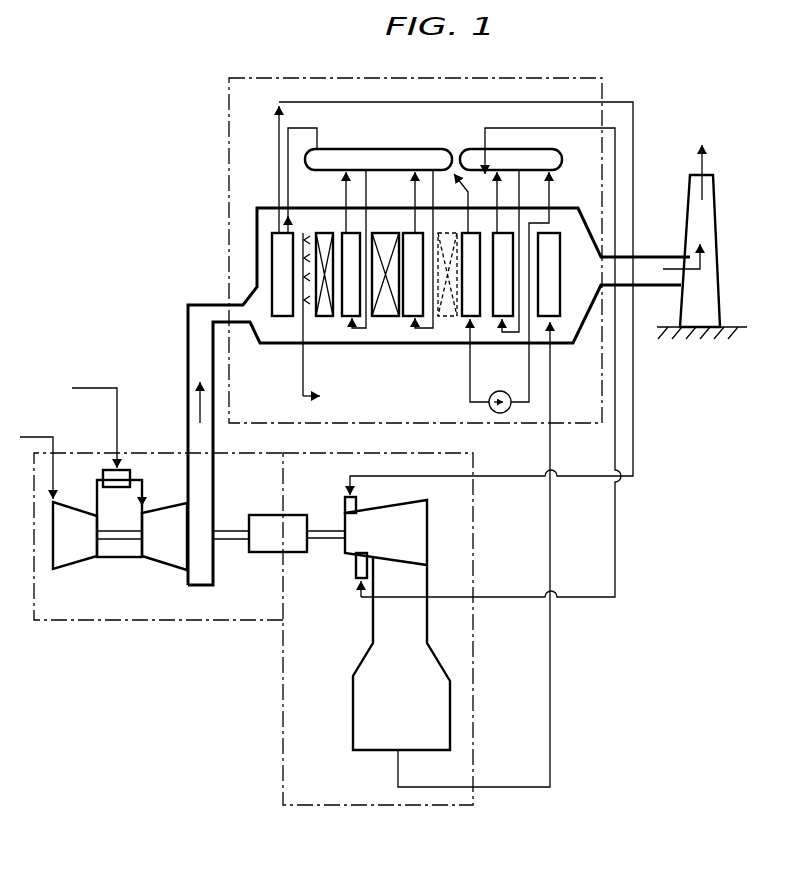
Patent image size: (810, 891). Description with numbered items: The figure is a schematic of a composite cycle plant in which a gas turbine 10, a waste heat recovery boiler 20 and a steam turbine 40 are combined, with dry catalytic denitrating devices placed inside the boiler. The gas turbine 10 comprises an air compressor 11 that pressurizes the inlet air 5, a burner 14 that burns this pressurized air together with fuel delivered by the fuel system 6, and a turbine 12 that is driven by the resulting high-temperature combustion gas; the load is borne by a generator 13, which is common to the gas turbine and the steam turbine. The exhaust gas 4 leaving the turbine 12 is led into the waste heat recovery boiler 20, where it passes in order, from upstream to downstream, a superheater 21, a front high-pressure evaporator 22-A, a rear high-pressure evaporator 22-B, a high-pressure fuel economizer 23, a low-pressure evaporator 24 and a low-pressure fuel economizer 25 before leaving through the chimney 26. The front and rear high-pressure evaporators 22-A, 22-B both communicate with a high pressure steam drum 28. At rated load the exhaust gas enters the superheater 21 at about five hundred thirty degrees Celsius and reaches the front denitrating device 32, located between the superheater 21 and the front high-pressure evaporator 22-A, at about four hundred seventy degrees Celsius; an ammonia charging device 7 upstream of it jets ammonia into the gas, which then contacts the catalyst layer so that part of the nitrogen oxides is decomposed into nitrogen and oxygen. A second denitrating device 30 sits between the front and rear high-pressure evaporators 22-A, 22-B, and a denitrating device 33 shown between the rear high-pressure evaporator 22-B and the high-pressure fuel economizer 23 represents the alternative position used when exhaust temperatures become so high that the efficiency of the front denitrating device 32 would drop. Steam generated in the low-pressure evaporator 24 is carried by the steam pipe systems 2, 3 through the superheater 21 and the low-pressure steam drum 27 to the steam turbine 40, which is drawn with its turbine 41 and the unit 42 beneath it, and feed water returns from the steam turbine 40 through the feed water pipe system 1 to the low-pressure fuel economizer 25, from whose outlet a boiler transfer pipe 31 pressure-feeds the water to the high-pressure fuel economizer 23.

The feed water pipe system 1 is at (551, 727).
The steam pipe system 2 is at (503, 478).
The steam pipe system 3 is at (512, 598).
The exhaust gas 4 is at (188, 392).
The inlet air 5 is at (44, 437).
The fuel system 6 is at (99, 388).
The ammonia charging device 7 is at (321, 397).
The gas turbine 10 is at (140, 620).
The air compressor 11 is at (72, 569).
The turbine 12 is at (152, 562).
The generator 13 is at (252, 553).
The burner 14 is at (126, 470).
The waste heat recovery boiler 20 is at (229, 137).
The superheater 21 is at (278, 318).
The front high-pressure evaporator 22-A is at (350, 318).
The rear high-pressure evaporator 22-B is at (415, 318).
The high-pressure fuel economizer 23 is at (472, 318).
The low-pressure evaporator 24 is at (505, 318).
The low-pressure fuel economizer 25 is at (555, 318).
The chimney 26 is at (712, 205).
The low-pressure steam drum 27 is at (560, 168).
The high pressure steam drum 28 is at (380, 149).
The denitrating device 30 is at (385, 318).
The boiler transfer pipe 31 is at (500, 414).
The front denitrating device 32 is at (323, 318).
The denitrating device 33 is at (447, 318).
The steam turbine 40 is at (370, 805).
The steam turbine 41 is at (428, 527).
The condenser 42 is at (355, 655).